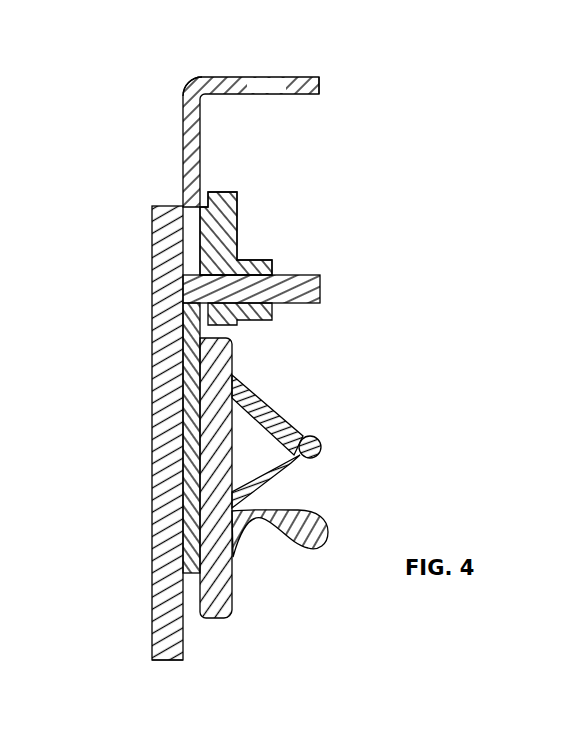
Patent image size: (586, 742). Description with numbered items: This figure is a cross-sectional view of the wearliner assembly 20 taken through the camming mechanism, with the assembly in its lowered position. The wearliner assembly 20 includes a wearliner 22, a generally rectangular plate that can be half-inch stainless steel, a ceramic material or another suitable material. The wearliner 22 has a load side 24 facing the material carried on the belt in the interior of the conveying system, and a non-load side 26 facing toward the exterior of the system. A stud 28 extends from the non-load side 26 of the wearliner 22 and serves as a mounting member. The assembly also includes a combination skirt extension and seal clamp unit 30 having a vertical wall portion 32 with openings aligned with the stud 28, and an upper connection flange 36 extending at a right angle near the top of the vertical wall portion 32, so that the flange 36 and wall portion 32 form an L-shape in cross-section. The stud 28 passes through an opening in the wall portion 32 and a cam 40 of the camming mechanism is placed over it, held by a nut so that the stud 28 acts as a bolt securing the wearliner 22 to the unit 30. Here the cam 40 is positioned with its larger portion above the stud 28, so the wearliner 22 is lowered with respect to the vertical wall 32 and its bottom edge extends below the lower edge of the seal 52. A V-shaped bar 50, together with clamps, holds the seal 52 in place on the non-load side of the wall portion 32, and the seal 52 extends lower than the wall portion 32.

The wearliner assembly 20 is at (90, 449).
The wearliner 22 is at (168, 205).
The load side 24 is at (152, 527).
The non-load side 26 is at (183, 630).
The stud 28 is at (320, 290).
The combination skirt extension and seal clamp unit 30 is at (188, 79).
The vertical wall portion 32 is at (202, 140).
The upper connection flange 36 is at (308, 76).
The cam 40 is at (238, 198).
The V-shaped bar 50 is at (321, 440).
The seal 52 is at (233, 572).